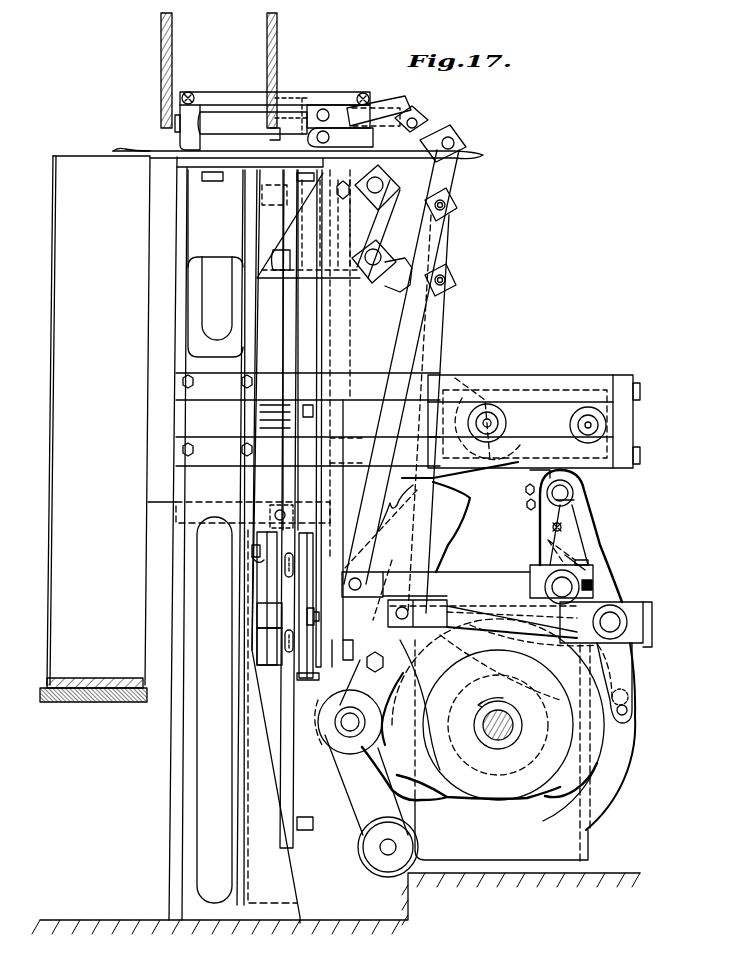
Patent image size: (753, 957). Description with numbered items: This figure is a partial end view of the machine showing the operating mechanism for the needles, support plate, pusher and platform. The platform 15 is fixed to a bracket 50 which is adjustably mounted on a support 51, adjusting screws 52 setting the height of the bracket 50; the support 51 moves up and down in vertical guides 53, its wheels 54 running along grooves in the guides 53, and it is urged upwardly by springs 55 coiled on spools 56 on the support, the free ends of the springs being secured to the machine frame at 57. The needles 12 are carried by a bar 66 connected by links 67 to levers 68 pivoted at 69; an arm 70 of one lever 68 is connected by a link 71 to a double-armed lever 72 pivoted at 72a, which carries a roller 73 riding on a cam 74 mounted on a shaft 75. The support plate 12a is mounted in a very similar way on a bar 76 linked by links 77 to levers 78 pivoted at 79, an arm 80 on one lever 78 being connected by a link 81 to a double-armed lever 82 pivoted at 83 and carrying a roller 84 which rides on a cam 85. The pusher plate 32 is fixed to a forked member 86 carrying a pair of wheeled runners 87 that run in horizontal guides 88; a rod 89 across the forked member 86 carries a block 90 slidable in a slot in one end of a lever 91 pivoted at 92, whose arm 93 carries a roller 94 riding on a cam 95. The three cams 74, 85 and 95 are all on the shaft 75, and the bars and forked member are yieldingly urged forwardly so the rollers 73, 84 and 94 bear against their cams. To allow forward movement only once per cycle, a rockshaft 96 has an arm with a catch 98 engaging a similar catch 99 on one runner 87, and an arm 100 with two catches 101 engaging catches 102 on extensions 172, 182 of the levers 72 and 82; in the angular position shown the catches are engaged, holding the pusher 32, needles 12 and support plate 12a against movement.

The needles 12 is at (283, 112).
The support plate 12a is at (268, 136).
The platform 15 is at (157, 502).
The pusher plate 32 is at (262, 420).
The bracket 50 is at (262, 510).
The support 51 is at (268, 588).
The adjusting screws 52 is at (256, 562).
The vertical guides 53 is at (290, 334).
The wheels 54 is at (290, 548).
The springs 55 is at (338, 420).
The spools 56 is at (356, 597).
The frame attachment point 57 is at (298, 205).
The bar 66 is at (322, 108).
The links 67 is at (395, 120).
The levers 68 is at (423, 118).
The pivot 69 is at (375, 186).
The arm 70 is at (450, 192).
The link 71 is at (446, 238).
The lever 72 is at (464, 580).
The pivot 72a is at (538, 584).
The roller 73 is at (590, 688).
The cam 74 is at (432, 652).
The shaft 75 is at (508, 716).
The bar 76 is at (320, 150).
The links 77 is at (440, 134).
The levers 78 is at (455, 178).
The pivot 79 is at (372, 280).
The arm 80 is at (428, 271).
The link 81 is at (446, 311).
The lever 82 is at (458, 628).
The pivot 83 is at (628, 610).
The roller 84 is at (628, 725).
The cam 85 is at (455, 800).
The forked member 86 is at (386, 512).
The wheeled runners 87 is at (540, 388).
The horizontal guides 88 is at (585, 378).
The rod 89 is at (462, 398).
The block 90 is at (480, 378).
The lever 91 is at (448, 520).
The pivot 92 is at (346, 722).
The arm 93 is at (355, 800).
The roller 94 is at (362, 842).
The cam 95 is at (492, 610).
The rockshaft 96 is at (576, 490).
The catch 98 is at (525, 486).
The catch 99 is at (527, 506).
The arm 100 is at (572, 512).
The catches 101 is at (585, 528).
The catches 102 is at (552, 528).
The extension 172 is at (550, 552).
The extension 182 is at (590, 556).